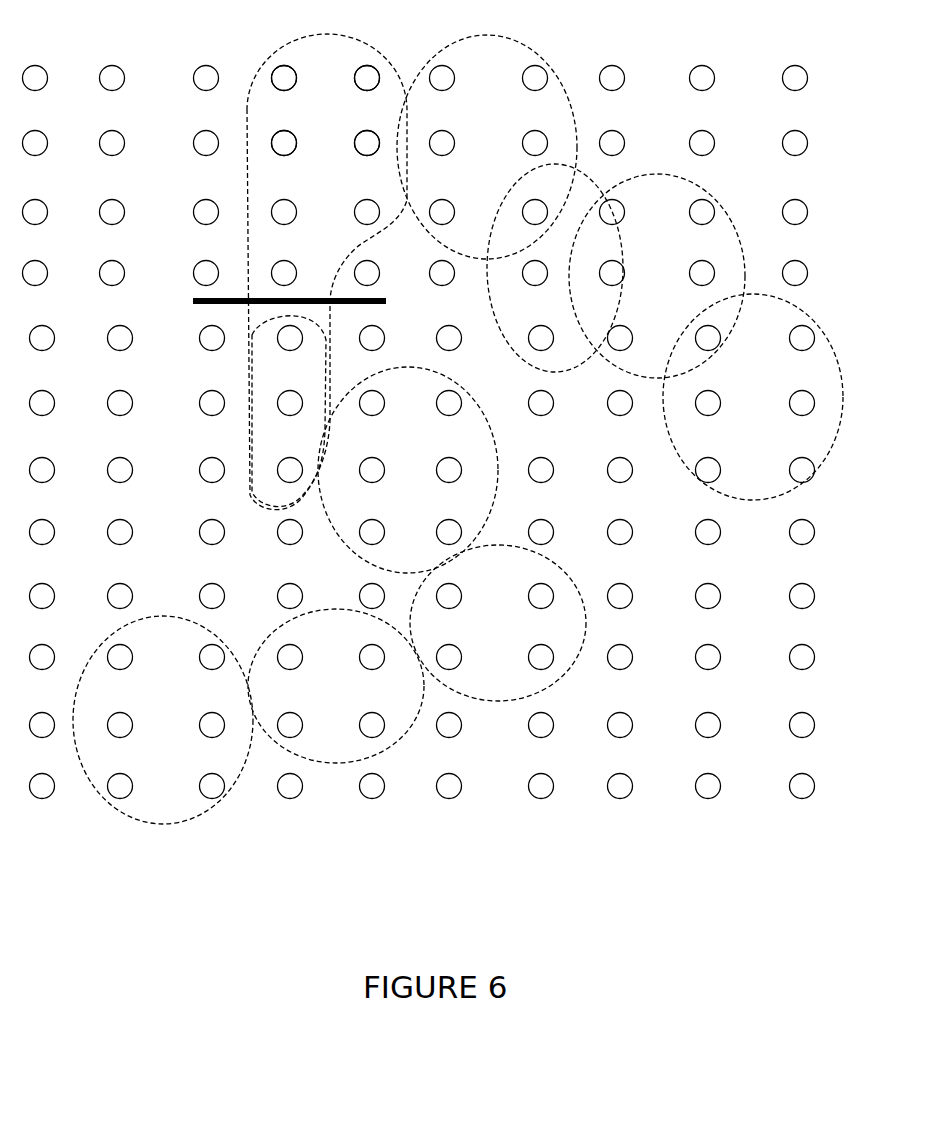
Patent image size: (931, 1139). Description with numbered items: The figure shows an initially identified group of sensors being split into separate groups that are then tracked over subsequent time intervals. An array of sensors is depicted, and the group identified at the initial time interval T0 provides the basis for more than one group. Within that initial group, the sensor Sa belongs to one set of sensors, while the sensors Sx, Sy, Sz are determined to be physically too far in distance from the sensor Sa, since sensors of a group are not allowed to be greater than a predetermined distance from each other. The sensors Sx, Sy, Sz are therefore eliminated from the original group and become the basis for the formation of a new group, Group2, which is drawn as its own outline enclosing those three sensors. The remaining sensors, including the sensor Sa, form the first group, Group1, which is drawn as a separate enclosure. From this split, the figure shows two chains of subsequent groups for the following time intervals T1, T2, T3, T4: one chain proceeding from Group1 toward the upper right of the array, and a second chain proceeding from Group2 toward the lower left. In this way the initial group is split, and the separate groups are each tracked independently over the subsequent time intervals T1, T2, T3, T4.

The sensor Sa is at (289, 68).
The sensor Sx is at (287, 356).
The sensor Sy is at (287, 417).
The sensor Sz is at (287, 483).
The time interval T0 is at (326, 111).
The time interval T1 is at (447, 304).
The time interval T2 is at (516, 432).
The time interval T3 is at (496, 468).
The time interval T4 is at (458, 559).
The group Group1 is at (327, 272).
The group Group2 is at (270, 390).